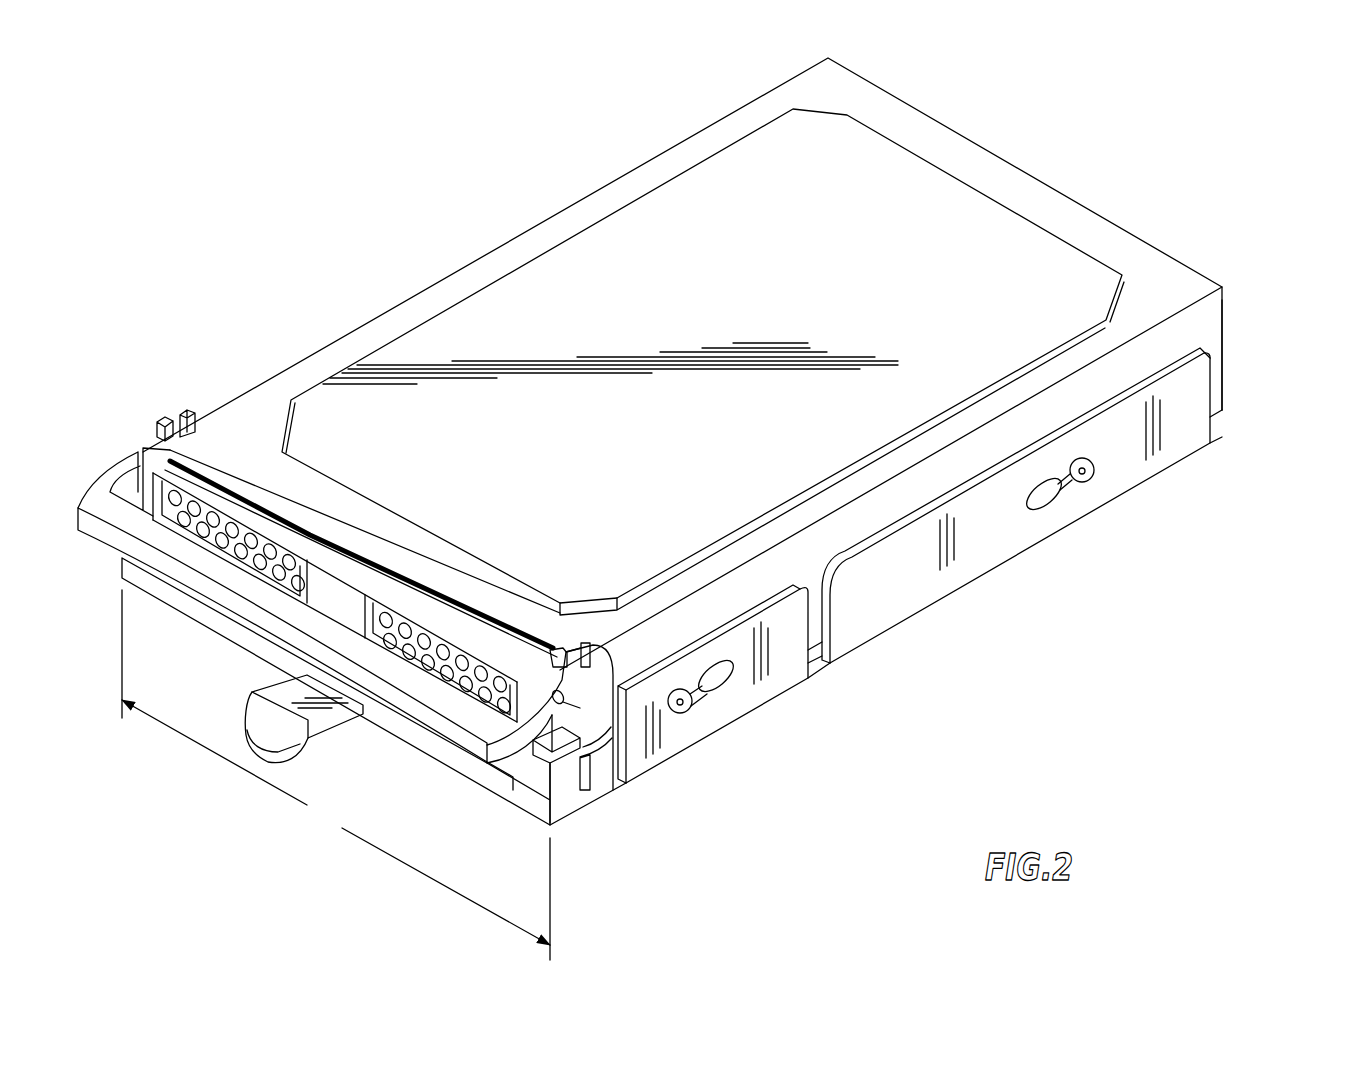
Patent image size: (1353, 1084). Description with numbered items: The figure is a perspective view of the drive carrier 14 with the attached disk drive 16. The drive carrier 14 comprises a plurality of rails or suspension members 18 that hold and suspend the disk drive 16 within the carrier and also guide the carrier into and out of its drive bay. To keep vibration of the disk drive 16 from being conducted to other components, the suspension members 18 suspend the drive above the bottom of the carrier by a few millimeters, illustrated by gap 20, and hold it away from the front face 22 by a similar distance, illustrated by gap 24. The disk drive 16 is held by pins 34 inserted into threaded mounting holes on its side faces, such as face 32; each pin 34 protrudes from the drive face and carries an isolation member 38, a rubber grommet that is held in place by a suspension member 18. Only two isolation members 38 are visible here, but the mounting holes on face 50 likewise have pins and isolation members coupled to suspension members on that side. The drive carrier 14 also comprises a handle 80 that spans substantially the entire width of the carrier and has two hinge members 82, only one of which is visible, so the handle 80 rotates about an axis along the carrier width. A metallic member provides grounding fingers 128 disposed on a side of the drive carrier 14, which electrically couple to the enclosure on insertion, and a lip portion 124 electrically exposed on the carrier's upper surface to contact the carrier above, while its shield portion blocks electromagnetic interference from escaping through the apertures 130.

The drive carrier 14 is at (372, 873).
The disk drive 16 is at (780, 298).
The suspension members 18 is at (987, 600).
The gap 20 is at (828, 670).
The front face 22 is at (210, 784).
The gap 24 is at (228, 447).
The face 32 is at (1213, 318).
The pin 34 is at (1082, 483).
The isolation member 38 is at (934, 652).
The face 50 is at (703, 108).
The handle 80 is at (240, 604).
The hinge member 82 is at (562, 704).
The lip portion 124 is at (478, 608).
The grounding fingers 128 is at (587, 780).
The apertures 130 is at (395, 615).